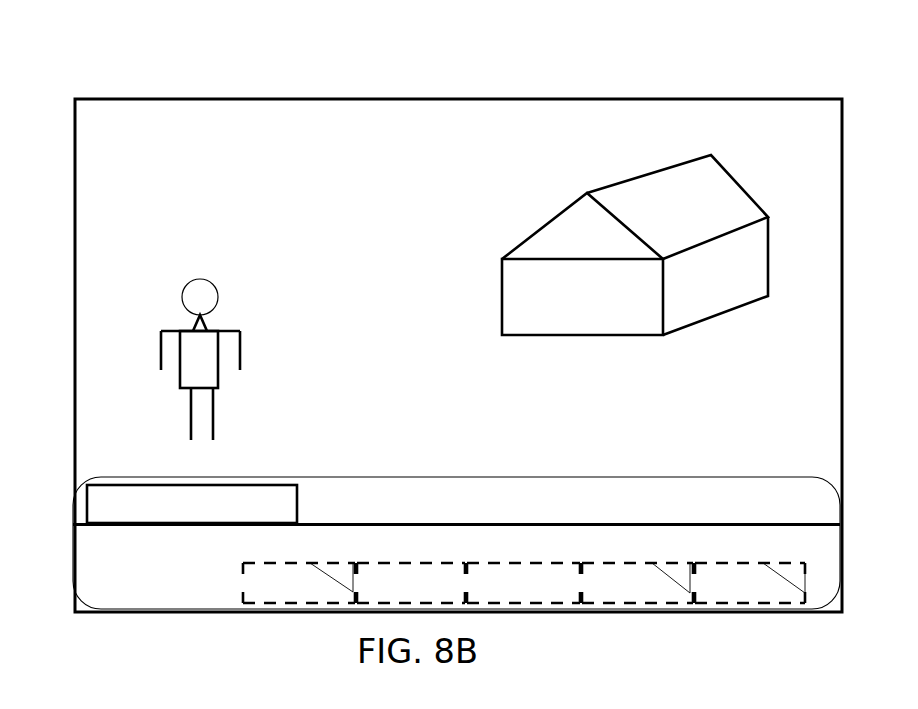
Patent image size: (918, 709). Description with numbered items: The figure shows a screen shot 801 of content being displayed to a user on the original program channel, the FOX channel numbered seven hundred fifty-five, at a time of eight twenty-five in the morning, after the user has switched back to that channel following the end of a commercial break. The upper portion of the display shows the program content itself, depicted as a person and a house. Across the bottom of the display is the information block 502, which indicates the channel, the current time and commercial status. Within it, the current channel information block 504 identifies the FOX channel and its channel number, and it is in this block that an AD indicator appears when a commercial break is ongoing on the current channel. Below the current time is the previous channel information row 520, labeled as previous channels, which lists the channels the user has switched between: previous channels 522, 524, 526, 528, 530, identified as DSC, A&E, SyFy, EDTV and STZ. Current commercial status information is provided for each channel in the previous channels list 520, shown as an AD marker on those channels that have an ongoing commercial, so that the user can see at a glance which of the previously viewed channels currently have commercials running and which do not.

The screen shot 801 is at (103, 79).
The information block 502 is at (768, 474).
The current channel information block 504 is at (296, 503).
The previous channel information row 520 is at (125, 585).
The previous channel 522 is at (297, 562).
The previous channel 524 is at (408, 563).
The previous channel 526 is at (520, 563).
The previous channel 528 is at (633, 563).
The previous channel 530 is at (745, 563).